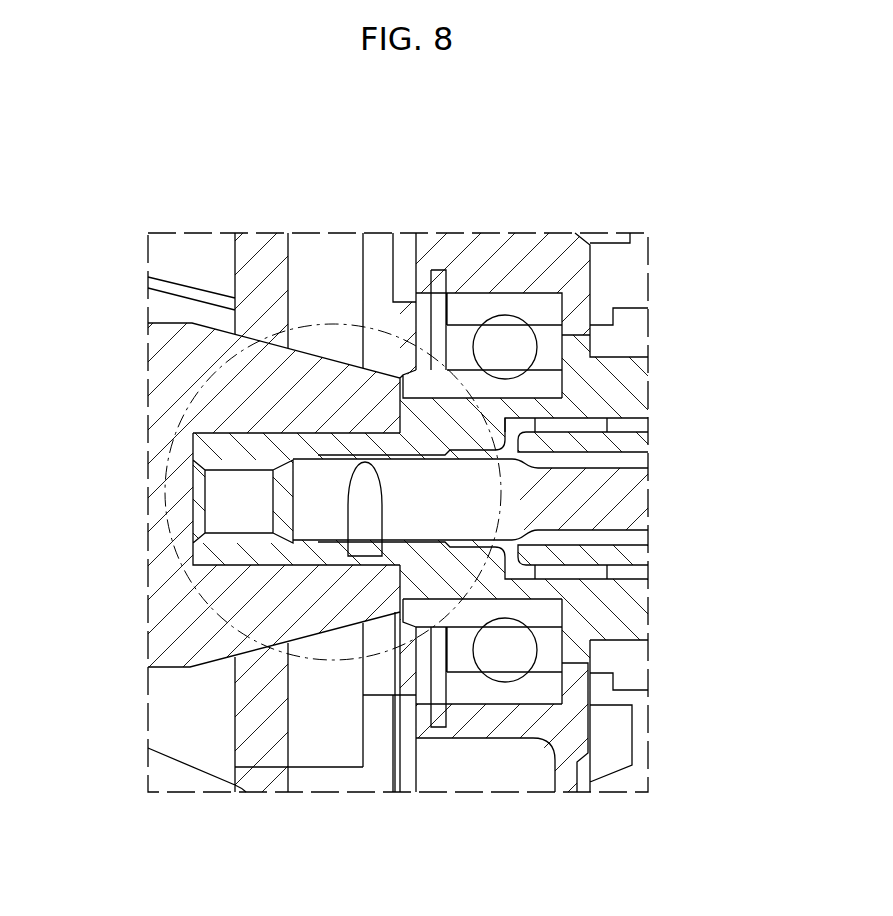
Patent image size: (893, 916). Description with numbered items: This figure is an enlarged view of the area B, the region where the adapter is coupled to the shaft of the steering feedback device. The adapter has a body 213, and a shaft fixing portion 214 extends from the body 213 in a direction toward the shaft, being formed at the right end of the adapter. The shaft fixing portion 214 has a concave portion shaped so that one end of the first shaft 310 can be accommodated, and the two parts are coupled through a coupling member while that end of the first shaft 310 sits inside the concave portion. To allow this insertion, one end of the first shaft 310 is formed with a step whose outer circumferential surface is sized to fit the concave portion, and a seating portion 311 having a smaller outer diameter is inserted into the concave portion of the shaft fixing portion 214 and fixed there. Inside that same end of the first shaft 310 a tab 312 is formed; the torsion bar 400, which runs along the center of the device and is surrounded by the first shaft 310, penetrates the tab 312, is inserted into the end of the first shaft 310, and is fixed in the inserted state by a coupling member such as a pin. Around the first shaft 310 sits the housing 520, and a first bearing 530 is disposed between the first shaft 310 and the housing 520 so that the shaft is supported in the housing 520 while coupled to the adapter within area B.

The body 213 is at (160, 592).
The shaft fixing portion 214 is at (248, 383).
The first shaft 310 is at (252, 552).
The seating portion 311 is at (283, 433).
The tab 312 is at (400, 550).
The torsion bar 400 is at (607, 496).
The housing 520 is at (477, 720).
The first bearing 530 is at (509, 298).
The area B is at (177, 430).